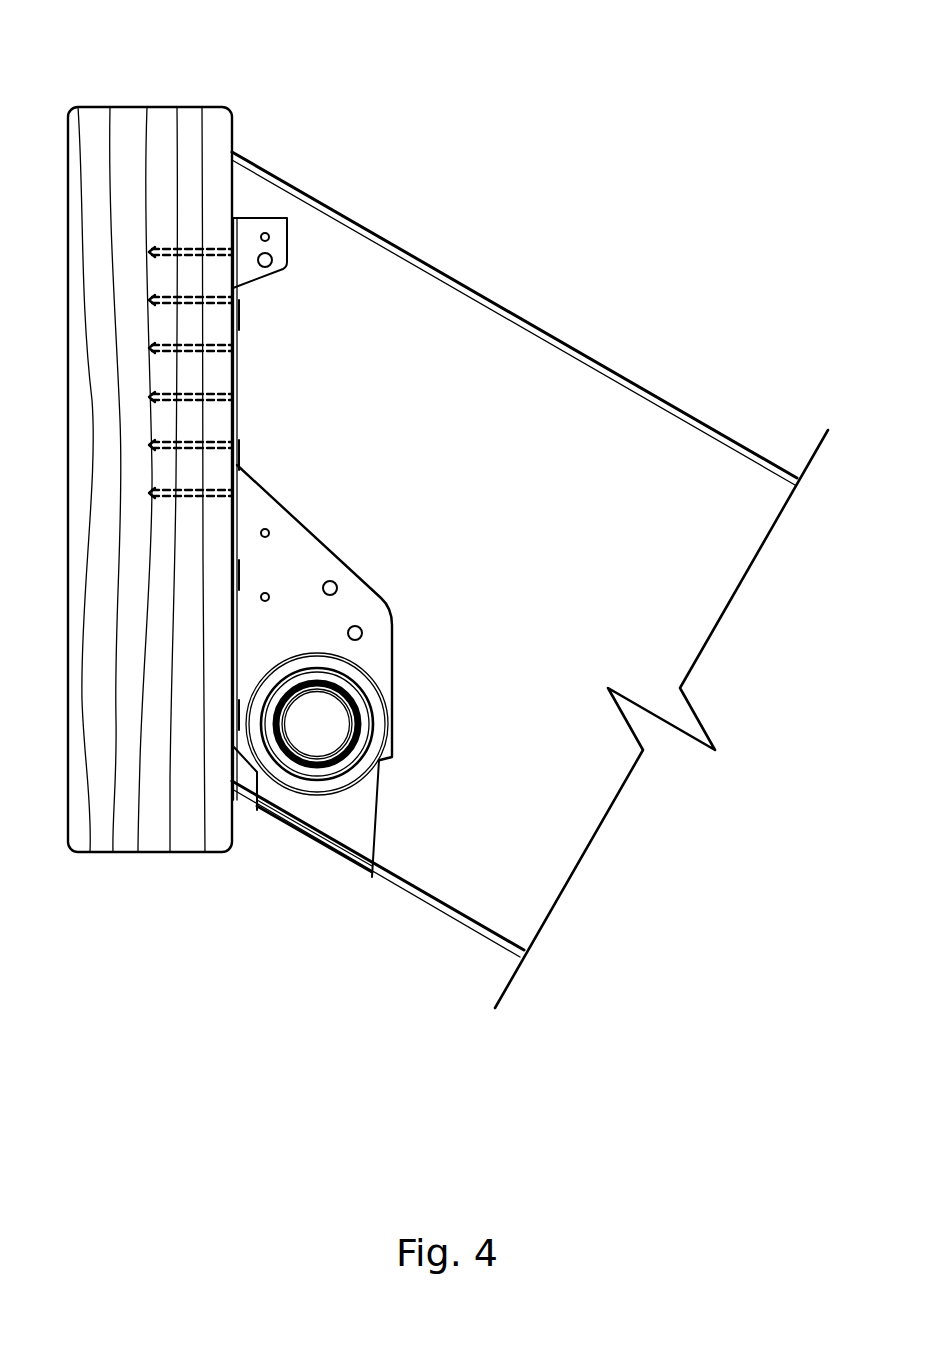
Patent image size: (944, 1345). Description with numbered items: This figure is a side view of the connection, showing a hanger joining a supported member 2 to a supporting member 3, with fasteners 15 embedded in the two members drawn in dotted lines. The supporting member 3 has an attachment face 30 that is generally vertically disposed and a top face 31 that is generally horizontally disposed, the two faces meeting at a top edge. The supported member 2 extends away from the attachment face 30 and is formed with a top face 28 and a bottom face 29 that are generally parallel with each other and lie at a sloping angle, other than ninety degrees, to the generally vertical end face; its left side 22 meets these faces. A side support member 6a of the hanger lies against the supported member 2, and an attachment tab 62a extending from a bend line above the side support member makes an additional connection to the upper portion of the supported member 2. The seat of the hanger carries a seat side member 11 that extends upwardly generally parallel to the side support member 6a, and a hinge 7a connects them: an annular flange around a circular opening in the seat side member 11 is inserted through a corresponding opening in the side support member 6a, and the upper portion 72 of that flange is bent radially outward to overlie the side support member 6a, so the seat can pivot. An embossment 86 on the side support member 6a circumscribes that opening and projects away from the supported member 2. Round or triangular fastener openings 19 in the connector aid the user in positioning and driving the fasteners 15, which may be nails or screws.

The supporting member 3 is at (100, 107).
The top face 31 is at (188, 107).
The attachment face 30 is at (233, 133).
The top face 28 is at (678, 406).
The supported member 2 is at (570, 349).
The left side 22 is at (727, 555).
The bottom face 29 is at (408, 906).
The attachment tab 62a is at (262, 218).
The side support member 6a is at (305, 548).
The seat side member 11 is at (360, 818).
The embossment 86 is at (352, 677).
The upper portion of the annular flange 72 is at (352, 698).
The hinge 7a is at (350, 748).
The fastener openings 19 is at (270, 236).
The fasteners 15 is at (273, 262).